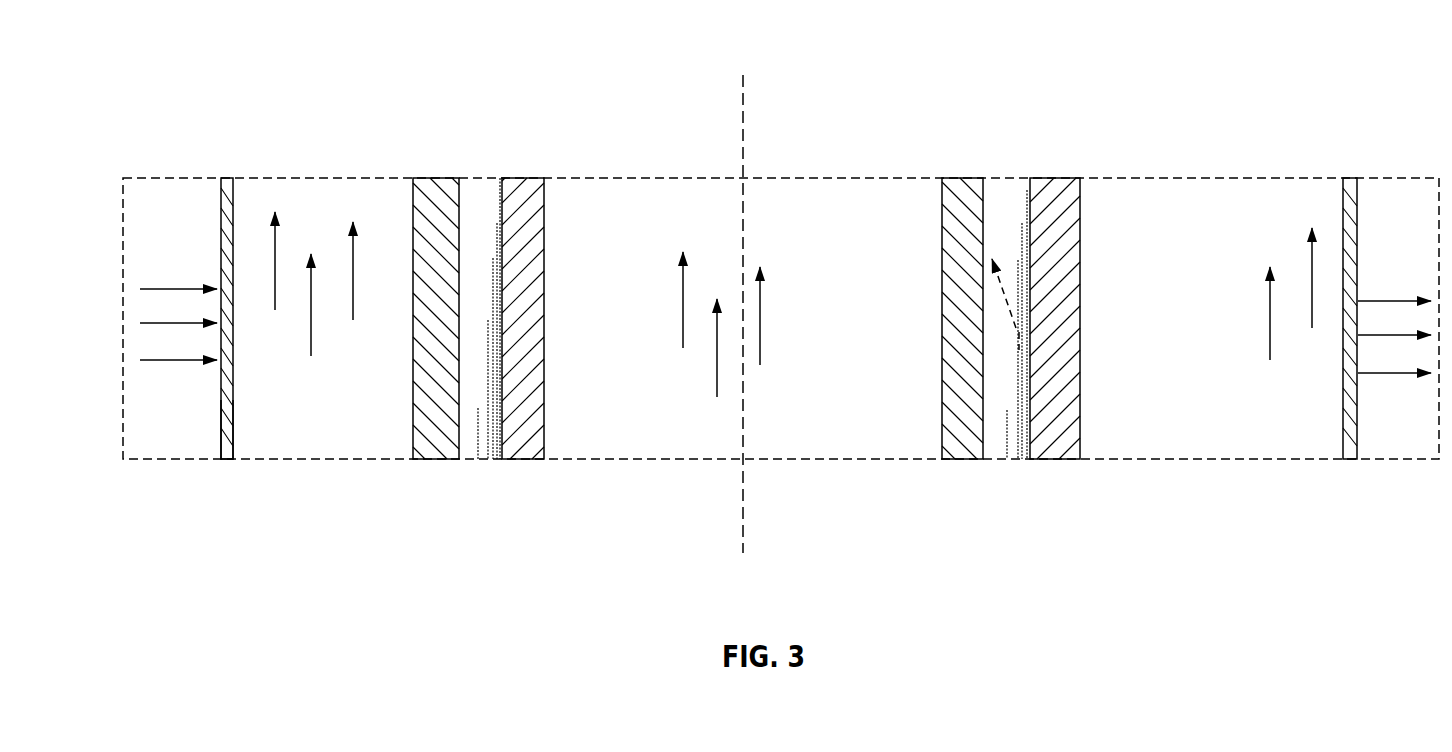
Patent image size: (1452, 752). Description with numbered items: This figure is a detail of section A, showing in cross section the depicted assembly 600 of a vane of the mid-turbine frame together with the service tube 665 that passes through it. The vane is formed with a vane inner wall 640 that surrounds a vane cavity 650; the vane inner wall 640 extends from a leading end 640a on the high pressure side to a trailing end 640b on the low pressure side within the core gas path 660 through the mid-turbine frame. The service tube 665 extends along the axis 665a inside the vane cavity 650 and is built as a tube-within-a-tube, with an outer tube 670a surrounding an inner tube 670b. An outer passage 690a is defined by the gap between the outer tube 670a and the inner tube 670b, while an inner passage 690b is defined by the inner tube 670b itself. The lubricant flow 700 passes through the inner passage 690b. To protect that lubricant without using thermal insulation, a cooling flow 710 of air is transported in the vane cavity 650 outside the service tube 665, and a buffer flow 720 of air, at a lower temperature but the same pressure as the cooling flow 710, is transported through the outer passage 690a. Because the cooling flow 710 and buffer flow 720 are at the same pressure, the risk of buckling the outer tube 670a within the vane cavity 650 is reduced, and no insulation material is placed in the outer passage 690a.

The electrochemical cell / flow system 600 is at (1170, 60).
The vane inner wall 640 is at (226, 196).
The leading end 640a is at (228, 446).
The trailing end 640b is at (1350, 446).
The vane cavity 650 is at (1298, 406).
The core gas path 660 is at (183, 364).
The service tube 665 is at (815, 488).
The axis 665a is at (745, 122).
The outer tube 670a is at (1050, 180).
The inner tube 670b is at (963, 178).
The outer passage 690a is at (1005, 446).
The inner passage 690b is at (703, 460).
The lubricant flow 700 is at (683, 348).
The cooling flow 710 is at (334, 434).
The buffer flow 720 is at (1018, 330).
The section A is at (484, 178).